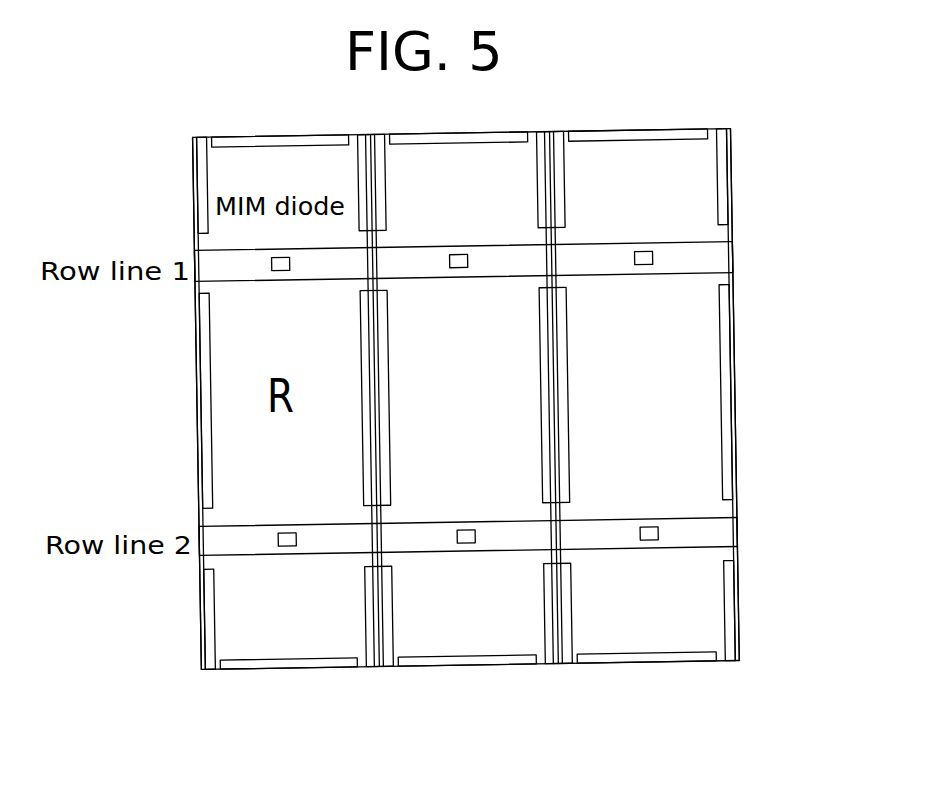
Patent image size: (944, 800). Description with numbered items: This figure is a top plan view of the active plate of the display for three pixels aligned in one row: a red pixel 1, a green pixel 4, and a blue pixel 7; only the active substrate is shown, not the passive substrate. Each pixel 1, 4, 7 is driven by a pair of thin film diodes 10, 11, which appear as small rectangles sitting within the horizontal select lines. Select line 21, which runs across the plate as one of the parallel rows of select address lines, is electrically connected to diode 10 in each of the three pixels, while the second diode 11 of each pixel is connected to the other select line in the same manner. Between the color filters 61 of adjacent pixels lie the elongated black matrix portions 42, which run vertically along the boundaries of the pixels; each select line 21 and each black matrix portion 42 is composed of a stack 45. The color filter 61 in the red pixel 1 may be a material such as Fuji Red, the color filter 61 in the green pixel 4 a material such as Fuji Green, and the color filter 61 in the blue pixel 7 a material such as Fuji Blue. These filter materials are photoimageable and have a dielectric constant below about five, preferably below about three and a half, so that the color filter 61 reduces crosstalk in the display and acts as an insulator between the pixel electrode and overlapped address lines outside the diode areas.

The red pixel 1 is at (268, 337).
The green pixel 4 is at (435, 422).
The blue pixel 7 is at (650, 317).
The thin film diode 10 is at (286, 270).
The thin film diode 11 is at (290, 546).
The select line 21 is at (400, 265).
The elongated black matrix portion 42 is at (210, 395).
The stack 45 is at (693, 252).
The color filter 61 is at (427, 495).